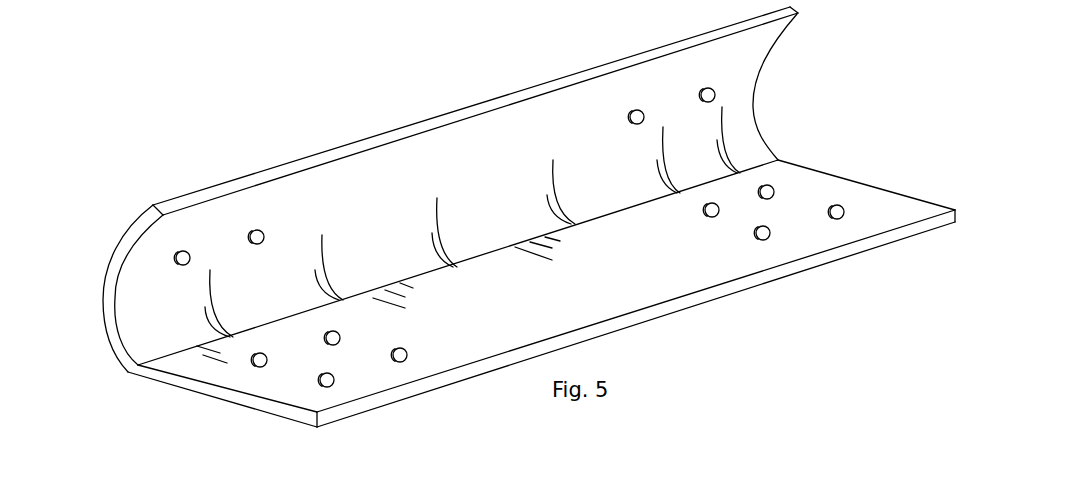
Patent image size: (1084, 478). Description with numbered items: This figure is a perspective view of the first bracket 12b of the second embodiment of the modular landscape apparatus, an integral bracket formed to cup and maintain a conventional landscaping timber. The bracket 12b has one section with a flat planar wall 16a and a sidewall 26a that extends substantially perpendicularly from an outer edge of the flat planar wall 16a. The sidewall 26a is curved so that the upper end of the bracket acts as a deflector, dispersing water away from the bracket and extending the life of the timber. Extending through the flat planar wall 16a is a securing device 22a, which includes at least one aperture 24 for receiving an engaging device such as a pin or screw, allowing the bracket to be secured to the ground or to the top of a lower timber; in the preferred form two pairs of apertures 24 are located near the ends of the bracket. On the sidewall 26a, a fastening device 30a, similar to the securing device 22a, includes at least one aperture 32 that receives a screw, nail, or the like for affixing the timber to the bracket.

The first bracket 12b is at (529, 217).
The flat planar wall 16a is at (541, 293).
The securing device 22a is at (731, 241).
The aperture 24 is at (340, 336).
The sidewall 26a is at (490, 189).
The fastening device 30a is at (229, 273).
The aperture 32 is at (628, 118).